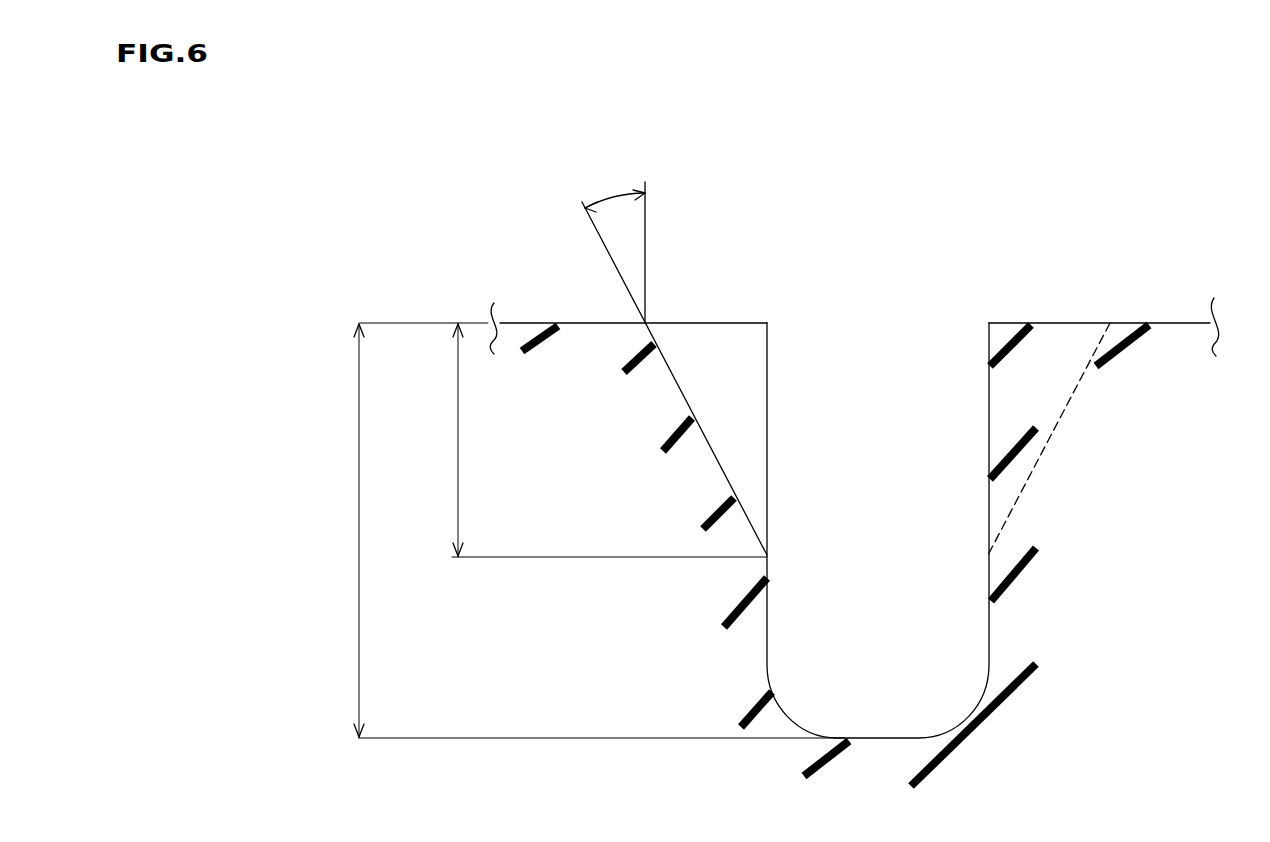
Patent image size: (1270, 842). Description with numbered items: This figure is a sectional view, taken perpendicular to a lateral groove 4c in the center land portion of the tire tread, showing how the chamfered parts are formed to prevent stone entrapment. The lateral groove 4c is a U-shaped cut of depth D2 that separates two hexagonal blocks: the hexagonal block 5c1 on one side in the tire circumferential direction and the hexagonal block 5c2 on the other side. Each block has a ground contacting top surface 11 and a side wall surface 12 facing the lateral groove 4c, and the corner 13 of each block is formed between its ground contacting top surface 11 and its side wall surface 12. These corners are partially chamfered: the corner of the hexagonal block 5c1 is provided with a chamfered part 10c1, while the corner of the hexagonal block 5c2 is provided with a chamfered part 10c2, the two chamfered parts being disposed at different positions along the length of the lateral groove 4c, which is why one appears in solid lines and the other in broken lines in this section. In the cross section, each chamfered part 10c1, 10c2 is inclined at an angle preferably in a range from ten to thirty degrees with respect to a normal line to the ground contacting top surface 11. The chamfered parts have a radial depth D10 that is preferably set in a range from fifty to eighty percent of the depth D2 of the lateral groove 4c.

The ground contacting top surface 11 is at (570, 322).
The side wall surface 12 is at (767, 598).
The corner 13 is at (771, 256).
The chamfered part 10c1 is at (1067, 398).
The chamfered part 10c2 is at (688, 399).
The lateral groove 4c is at (909, 484).
The hexagonal block 5c1 is at (1205, 647).
The hexagonal block 5c2 is at (627, 654).
The depth of the chamfered parts D10 is at (455, 442).
The depth of the lateral grooves D2 is at (360, 533).